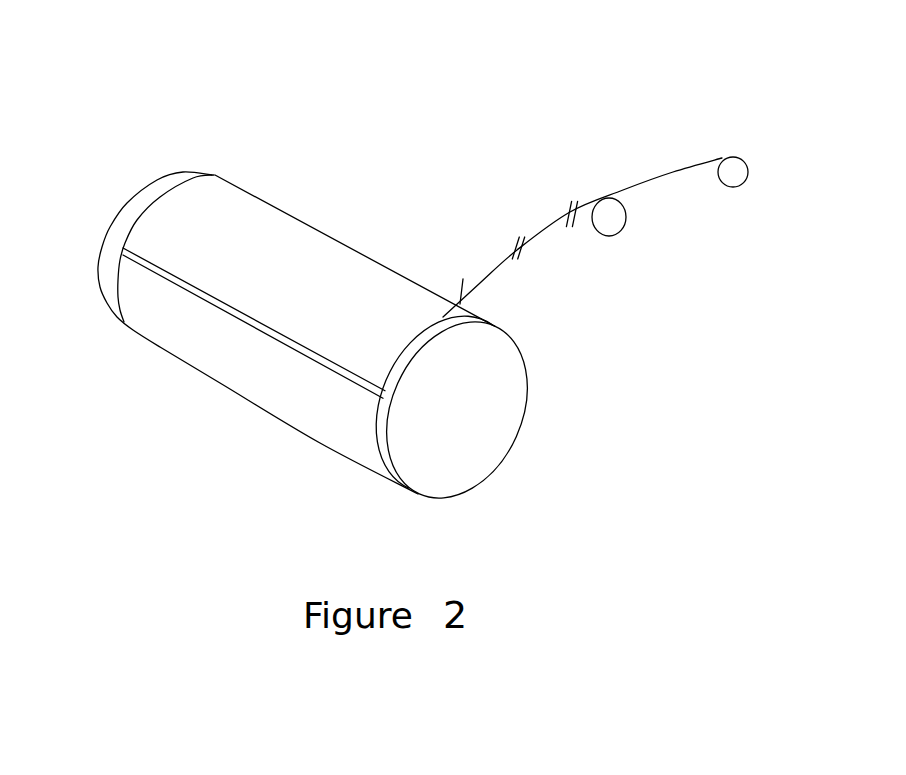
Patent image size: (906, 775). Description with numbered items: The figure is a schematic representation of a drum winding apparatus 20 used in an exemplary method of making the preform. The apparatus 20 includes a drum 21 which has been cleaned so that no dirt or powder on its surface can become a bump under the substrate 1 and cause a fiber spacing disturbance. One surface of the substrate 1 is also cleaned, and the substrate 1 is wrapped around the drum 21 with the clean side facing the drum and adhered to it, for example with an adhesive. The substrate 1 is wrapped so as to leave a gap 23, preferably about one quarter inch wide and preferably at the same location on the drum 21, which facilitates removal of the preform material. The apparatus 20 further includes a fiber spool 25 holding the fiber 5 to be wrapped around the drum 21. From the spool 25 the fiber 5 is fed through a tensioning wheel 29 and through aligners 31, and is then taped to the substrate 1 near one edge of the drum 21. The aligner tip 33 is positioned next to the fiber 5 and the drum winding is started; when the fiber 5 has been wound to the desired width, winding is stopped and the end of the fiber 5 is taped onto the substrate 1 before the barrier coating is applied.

The drum winding apparatus 20 is at (431, 96).
The substrate 1 is at (363, 450).
The drum 21 is at (503, 428).
The gap 23 is at (123, 251).
The aligner tip 33 is at (455, 283).
The fiber 5 is at (658, 180).
The aligners 31 is at (523, 230).
The tensioning wheel 29 is at (613, 228).
The fiber spool 25 is at (735, 183).